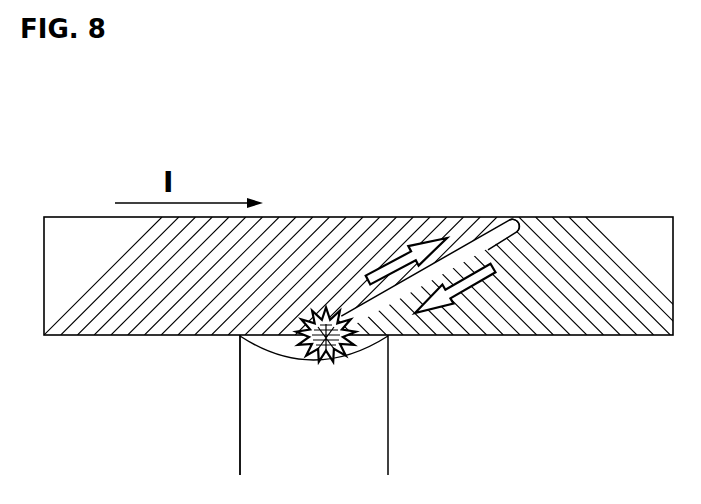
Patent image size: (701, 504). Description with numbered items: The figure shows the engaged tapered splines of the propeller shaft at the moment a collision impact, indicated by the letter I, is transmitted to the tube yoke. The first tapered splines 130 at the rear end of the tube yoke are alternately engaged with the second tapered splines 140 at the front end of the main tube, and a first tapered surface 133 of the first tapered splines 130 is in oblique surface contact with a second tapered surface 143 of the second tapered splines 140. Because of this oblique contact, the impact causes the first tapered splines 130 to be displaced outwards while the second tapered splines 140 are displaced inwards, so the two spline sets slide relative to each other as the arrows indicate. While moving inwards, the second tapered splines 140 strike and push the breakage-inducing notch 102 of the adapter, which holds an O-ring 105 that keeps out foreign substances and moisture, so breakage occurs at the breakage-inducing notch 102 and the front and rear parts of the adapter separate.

The breakage-inducing notch 102 is at (280, 342).
The O-ring 105 is at (345, 360).
The first tapered splines 130 is at (354, 211).
The first tapered surface 133 is at (488, 245).
The second tapered splines 140 is at (484, 341).
The second tapered surface 143 is at (518, 224).